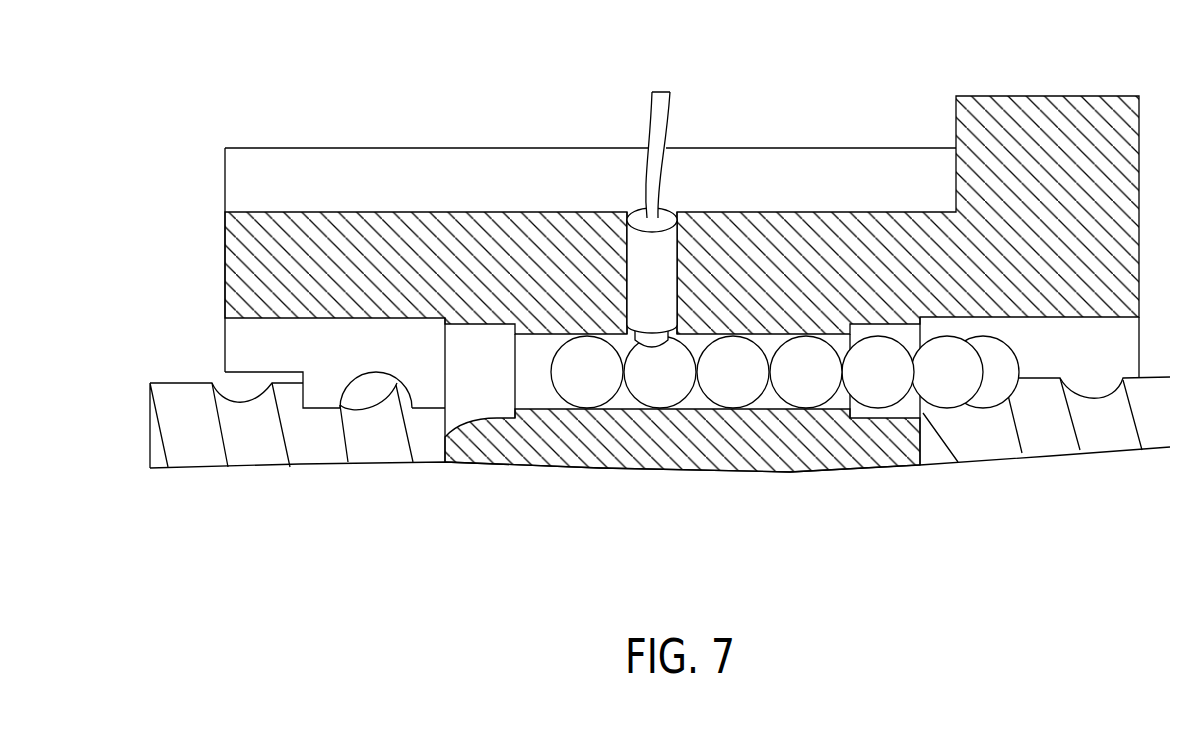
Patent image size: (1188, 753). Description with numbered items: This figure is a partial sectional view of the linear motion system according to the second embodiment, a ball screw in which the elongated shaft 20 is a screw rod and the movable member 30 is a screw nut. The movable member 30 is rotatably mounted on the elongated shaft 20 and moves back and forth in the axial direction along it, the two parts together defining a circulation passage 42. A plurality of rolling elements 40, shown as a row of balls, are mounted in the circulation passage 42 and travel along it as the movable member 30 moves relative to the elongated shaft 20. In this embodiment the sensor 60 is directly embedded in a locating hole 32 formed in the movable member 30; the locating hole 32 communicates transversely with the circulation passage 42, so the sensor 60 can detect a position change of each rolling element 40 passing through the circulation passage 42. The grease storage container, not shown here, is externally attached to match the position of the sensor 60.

The elongated shaft 20 is at (188, 402).
The movable member 30 is at (833, 260).
The locating hole 32 is at (680, 252).
The rolling elements 40 is at (663, 387).
The circulation passage 42 is at (537, 395).
The sensor 60 is at (643, 263).